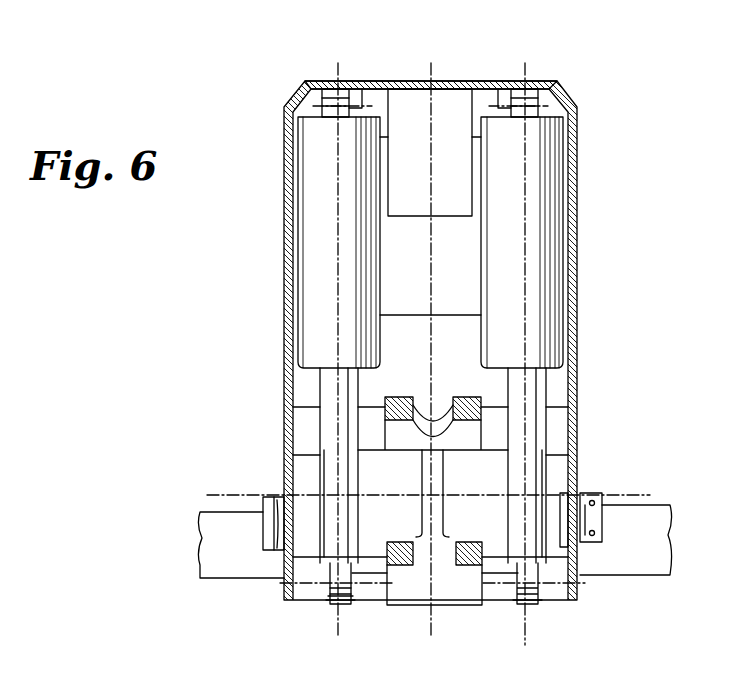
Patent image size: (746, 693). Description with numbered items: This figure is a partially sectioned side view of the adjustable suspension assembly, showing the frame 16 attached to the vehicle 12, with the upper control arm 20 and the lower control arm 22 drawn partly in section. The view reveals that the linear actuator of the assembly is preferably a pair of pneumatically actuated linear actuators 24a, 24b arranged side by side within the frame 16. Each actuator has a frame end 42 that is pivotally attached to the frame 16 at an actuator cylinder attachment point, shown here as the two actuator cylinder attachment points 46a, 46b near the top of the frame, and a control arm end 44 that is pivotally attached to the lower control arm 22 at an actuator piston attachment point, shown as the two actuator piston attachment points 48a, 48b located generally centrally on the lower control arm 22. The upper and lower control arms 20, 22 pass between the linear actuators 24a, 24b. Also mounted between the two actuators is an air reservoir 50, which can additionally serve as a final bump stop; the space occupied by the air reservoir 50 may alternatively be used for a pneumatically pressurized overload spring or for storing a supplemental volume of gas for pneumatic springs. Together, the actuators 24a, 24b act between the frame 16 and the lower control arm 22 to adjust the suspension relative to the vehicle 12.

The vehicle 12 is at (647, 505).
The frame 16 is at (290, 310).
The upper control arm 20 is at (493, 407).
The lower control arm 22 is at (503, 607).
The linear actuator 24a is at (307, 207).
The linear actuator 24b is at (543, 207).
The frame end 42 is at (550, 110).
The control arm end 44 is at (352, 592).
The actuator cylinder attachment point 46a is at (318, 95).
The actuator cylinder attachment point 46b is at (540, 93).
The actuator piston attachment point 48a is at (325, 594).
The actuator piston attachment point 48b is at (543, 592).
The air reservoir 50 is at (461, 216).